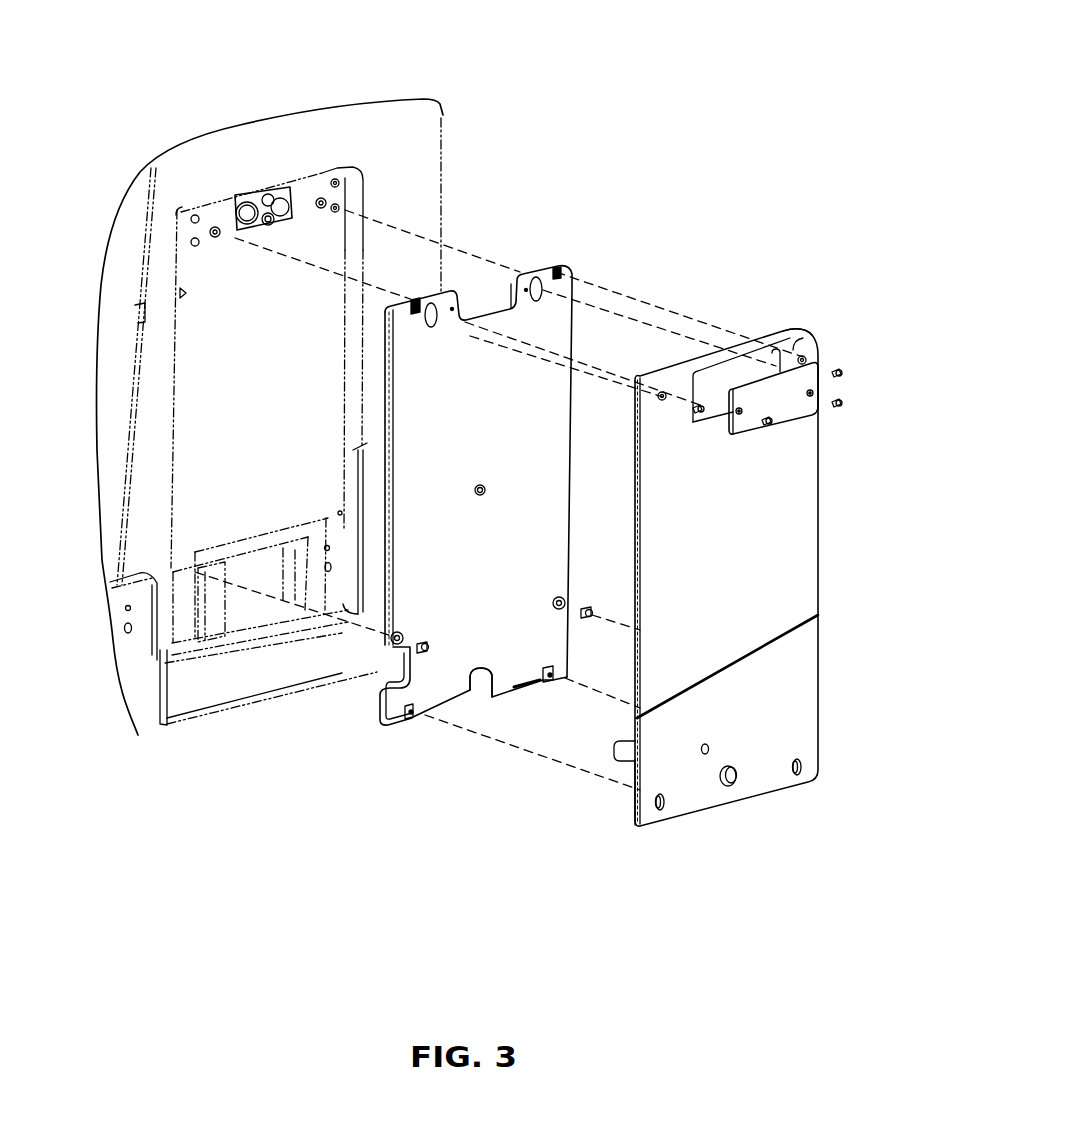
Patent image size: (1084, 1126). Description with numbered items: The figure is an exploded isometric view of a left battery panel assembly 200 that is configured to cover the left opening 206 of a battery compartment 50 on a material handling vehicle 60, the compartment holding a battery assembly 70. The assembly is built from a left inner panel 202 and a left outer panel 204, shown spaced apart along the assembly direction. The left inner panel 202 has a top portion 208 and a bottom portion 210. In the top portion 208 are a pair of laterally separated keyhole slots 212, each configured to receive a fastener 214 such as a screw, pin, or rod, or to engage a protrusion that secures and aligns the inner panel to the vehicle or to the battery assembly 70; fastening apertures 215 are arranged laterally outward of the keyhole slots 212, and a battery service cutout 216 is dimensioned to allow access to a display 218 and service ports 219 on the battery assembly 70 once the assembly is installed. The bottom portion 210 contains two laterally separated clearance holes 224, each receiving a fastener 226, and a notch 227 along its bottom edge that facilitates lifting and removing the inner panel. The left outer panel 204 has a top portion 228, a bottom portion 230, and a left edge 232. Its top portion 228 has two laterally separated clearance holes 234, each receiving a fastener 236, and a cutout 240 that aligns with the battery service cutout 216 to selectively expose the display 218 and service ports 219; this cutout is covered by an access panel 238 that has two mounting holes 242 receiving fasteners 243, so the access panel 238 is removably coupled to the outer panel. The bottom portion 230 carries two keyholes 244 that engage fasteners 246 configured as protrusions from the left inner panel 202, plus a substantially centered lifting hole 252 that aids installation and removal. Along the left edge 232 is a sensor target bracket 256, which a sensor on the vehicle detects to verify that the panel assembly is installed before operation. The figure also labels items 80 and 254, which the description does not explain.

The battery compartment 50 is at (173, 367).
The material handling vehicle 60 is at (182, 168).
The battery assembly 70 is at (279, 387).
The slot 80 is at (240, 605).
The left battery panel assembly 200 is at (728, 92).
The left inner panel 202 is at (575, 272).
The left outer panel 204 is at (818, 342).
The left opening 206 is at (180, 293).
The top portion 208 is at (530, 150).
The bottom portion 210 is at (388, 749).
The keyhole slot 212 is at (452, 292).
The fastener 214 is at (321, 198).
The fastening aperture 215 is at (418, 298).
The battery service cutout 216 is at (458, 304).
The display 218 is at (245, 196).
The service ports 219 is at (269, 194).
The clearance hole 224 is at (555, 605).
The fastener 226 is at (430, 646).
The notch 227 is at (480, 698).
The top portion 228 is at (741, 236).
The bottom portion 230 is at (712, 855).
The left edge 232 is at (634, 815).
The clearance hole 234 is at (663, 392).
The fastener 236 is at (842, 373).
The access panel 238 is at (792, 420).
The cutout 240 is at (776, 356).
The mounting hole 242 is at (737, 405).
The fastener 243 is at (843, 403).
The keyhole 244 is at (667, 804).
The fastener 246 is at (412, 716).
The lifting hole 252 is at (734, 768).
The aperture 254 is at (708, 744).
The sensor target bracket 256 is at (615, 762).